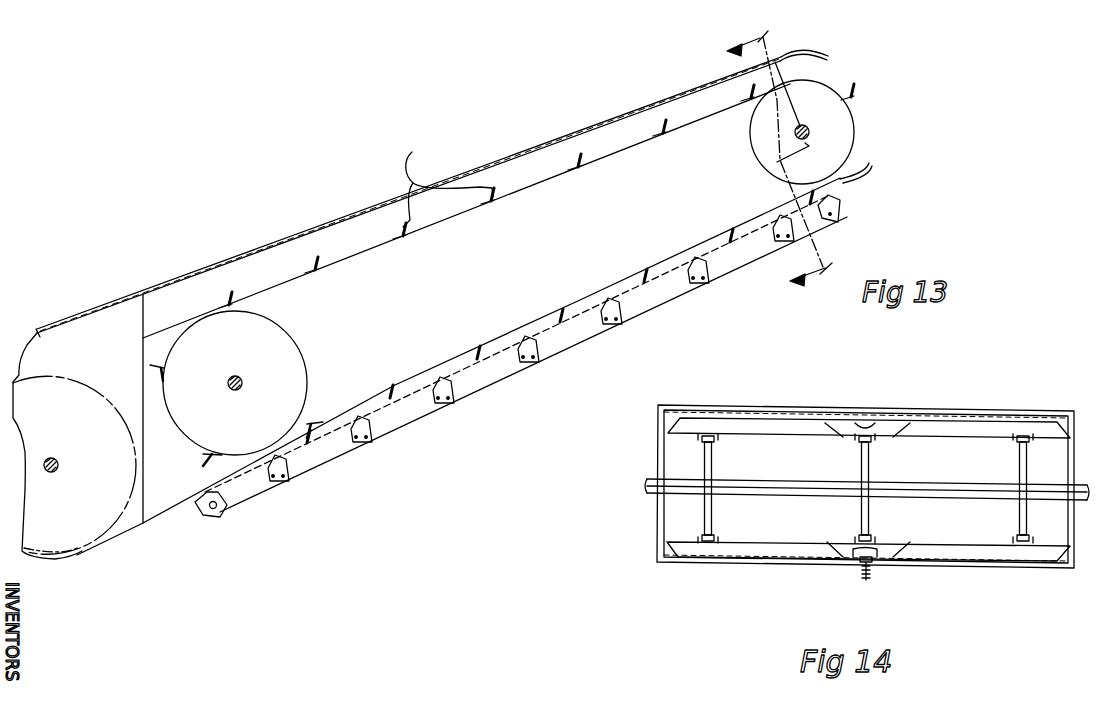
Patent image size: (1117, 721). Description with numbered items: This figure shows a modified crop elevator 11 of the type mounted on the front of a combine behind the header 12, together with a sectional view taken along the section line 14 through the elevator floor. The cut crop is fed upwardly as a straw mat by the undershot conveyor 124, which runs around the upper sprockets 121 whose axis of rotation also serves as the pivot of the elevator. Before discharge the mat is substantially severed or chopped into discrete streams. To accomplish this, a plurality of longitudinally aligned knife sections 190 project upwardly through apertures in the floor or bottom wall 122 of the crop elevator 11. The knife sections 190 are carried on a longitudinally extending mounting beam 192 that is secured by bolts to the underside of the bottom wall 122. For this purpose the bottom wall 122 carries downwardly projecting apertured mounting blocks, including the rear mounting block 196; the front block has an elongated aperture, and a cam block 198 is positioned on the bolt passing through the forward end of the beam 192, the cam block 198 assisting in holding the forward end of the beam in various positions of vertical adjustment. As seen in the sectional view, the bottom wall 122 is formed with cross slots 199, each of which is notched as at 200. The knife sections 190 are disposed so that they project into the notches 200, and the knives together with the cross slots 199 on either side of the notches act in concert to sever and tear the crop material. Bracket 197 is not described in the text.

In FIG. 13, the crop elevator 11 is at (609, 100).
In FIG. 13, the header 12 is at (73, 298).
In FIG. 13, the crop threshing and separating means 14 is at (792, 154).
In FIG. 13, the upper sprockets 121 is at (752, 150).
In FIG. 13, the bottom wall 122 is at (164, 514).
In FIG. 14, the bottom wall 122 is at (972, 563).
In FIG. 13, the undershot conveyor 124 is at (513, 192).
In FIG. 13, the knife sections 190 is at (531, 358).
In FIG. 14, the knife sections 190 is at (871, 555).
In FIG. 13, the mounting beam 192 is at (330, 452).
In FIG. 14, the mounting beam 192 is at (876, 568).
In FIG. 13, the rear mounting block 196 is at (840, 206).
In FIG. 13, the bracket 197 is at (198, 507).
In FIG. 13, the cam block 198 is at (219, 508).
In FIG. 13, the cross slots 199 is at (448, 183).
In FIG. 14, the cross slots 199 is at (767, 425).
In FIG. 14, the notches 200 is at (866, 420).